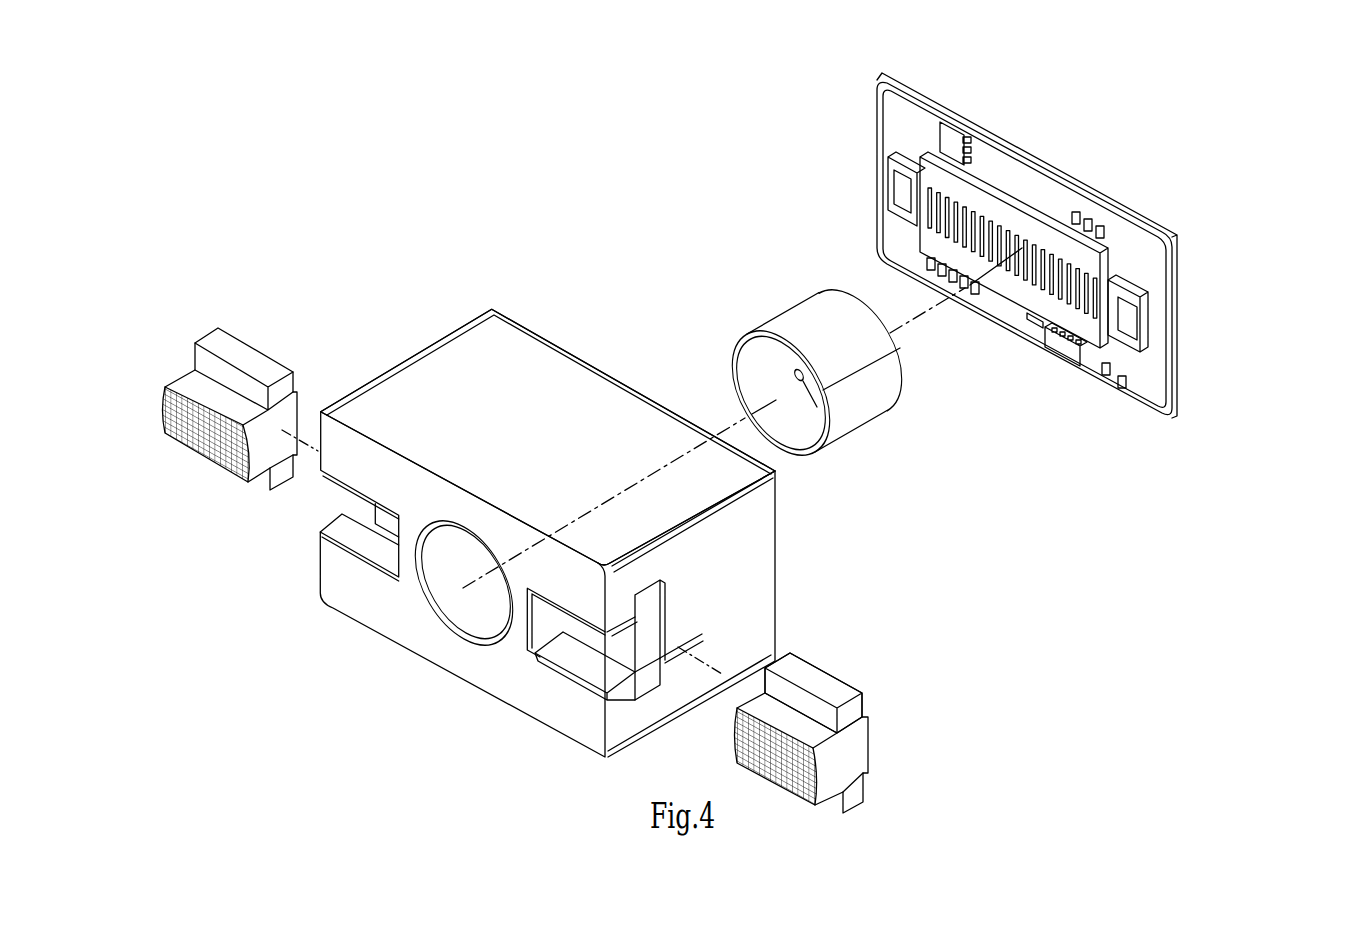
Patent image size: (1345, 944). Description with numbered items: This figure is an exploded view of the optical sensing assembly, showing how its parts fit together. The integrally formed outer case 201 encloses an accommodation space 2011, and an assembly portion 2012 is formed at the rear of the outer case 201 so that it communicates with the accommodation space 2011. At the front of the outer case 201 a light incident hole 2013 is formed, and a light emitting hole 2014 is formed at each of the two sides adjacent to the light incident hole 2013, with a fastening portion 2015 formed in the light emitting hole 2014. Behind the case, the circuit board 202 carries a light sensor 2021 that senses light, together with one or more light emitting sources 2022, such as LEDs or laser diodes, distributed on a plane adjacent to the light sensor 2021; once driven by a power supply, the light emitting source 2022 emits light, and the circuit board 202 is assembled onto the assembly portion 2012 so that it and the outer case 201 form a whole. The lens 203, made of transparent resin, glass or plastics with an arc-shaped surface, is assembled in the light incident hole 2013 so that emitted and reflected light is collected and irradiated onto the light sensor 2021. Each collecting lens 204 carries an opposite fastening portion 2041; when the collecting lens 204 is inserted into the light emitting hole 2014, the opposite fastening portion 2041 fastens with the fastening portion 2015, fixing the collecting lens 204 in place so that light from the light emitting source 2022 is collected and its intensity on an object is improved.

The outer case 201 is at (520, 518).
The accommodation space 2011 is at (488, 622).
The assembly portion 2012 is at (508, 322).
The light incident hole 2013 is at (465, 625).
The light emitting hole 2014 is at (360, 507).
The fastening portion 2015 is at (658, 590).
The circuit board 202 is at (1101, 270).
The light sensor 2021 is at (1018, 297).
The light emitting source 2022 is at (1127, 315).
The lens 203 is at (795, 315).
The collecting lens 204 is at (920, 717).
The opposite fastening portion 2041 is at (800, 695).